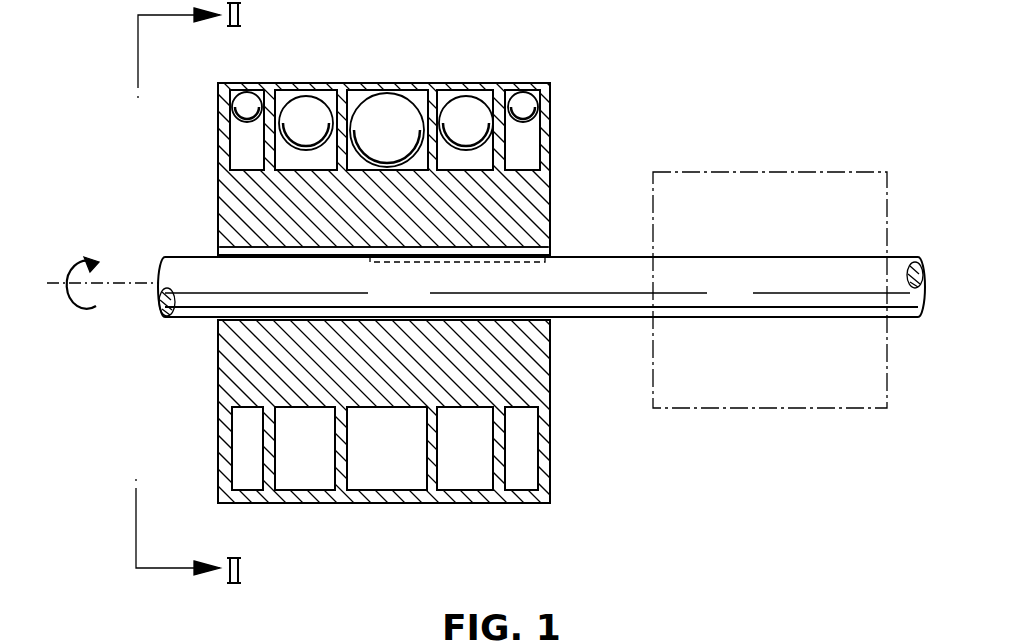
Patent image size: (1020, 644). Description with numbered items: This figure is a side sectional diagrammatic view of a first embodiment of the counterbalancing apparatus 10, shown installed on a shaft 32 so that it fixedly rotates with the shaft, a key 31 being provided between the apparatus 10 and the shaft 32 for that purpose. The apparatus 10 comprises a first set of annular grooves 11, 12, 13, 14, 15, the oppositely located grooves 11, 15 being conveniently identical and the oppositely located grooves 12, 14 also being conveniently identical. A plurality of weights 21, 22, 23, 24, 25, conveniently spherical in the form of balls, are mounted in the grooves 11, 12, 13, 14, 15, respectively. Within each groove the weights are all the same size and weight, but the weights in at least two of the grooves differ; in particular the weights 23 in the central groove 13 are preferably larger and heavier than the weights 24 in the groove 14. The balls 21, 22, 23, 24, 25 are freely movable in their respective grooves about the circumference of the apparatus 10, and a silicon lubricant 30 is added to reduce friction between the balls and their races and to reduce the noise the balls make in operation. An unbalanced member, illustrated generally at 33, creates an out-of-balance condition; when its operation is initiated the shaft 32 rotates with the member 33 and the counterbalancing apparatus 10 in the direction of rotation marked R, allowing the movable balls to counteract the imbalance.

The counterbalancing apparatus 10 is at (608, 56).
The annular groove 11 is at (245, 147).
The annular groove 12 is at (297, 160).
The annular groove 13 is at (362, 168).
The annular groove 14 is at (548, 198).
The annular groove 15 is at (523, 138).
The weights 21 is at (245, 100).
The weights 22 is at (305, 103).
The weights 23 is at (382, 103).
The weights 24 is at (463, 103).
The weights 25 is at (522, 100).
The silicon lubricant 30 is at (532, 163).
The key 31 is at (477, 252).
The shaft 32 is at (609, 303).
The unbalanced member 33 is at (782, 170).
The direction of rotation R is at (61, 261).